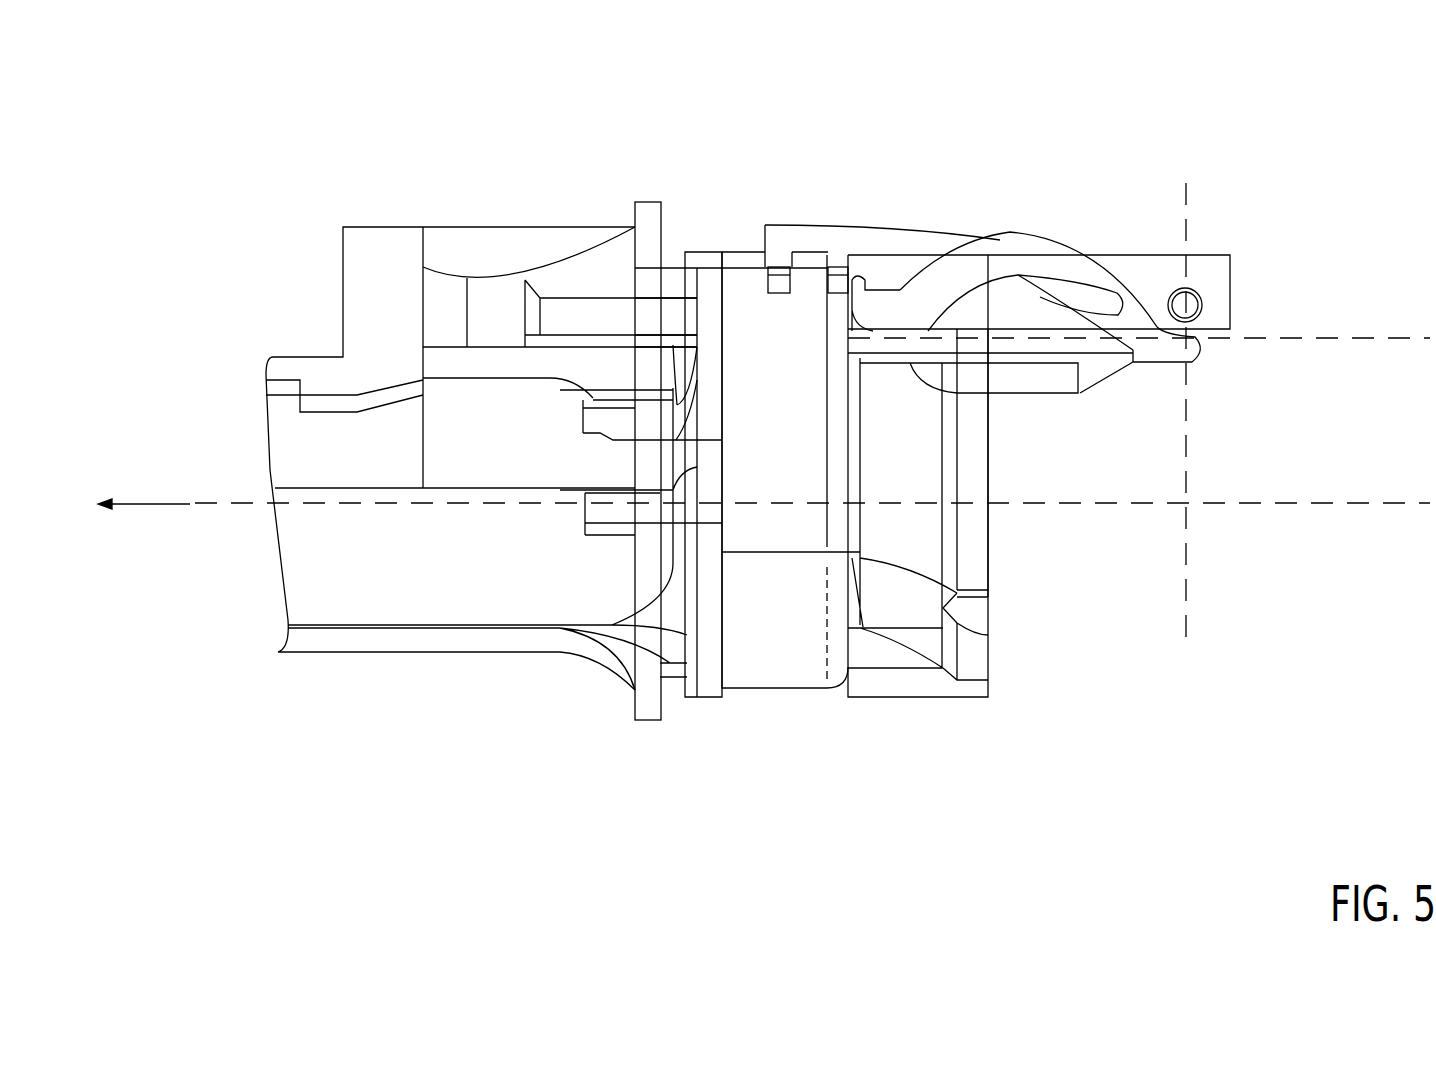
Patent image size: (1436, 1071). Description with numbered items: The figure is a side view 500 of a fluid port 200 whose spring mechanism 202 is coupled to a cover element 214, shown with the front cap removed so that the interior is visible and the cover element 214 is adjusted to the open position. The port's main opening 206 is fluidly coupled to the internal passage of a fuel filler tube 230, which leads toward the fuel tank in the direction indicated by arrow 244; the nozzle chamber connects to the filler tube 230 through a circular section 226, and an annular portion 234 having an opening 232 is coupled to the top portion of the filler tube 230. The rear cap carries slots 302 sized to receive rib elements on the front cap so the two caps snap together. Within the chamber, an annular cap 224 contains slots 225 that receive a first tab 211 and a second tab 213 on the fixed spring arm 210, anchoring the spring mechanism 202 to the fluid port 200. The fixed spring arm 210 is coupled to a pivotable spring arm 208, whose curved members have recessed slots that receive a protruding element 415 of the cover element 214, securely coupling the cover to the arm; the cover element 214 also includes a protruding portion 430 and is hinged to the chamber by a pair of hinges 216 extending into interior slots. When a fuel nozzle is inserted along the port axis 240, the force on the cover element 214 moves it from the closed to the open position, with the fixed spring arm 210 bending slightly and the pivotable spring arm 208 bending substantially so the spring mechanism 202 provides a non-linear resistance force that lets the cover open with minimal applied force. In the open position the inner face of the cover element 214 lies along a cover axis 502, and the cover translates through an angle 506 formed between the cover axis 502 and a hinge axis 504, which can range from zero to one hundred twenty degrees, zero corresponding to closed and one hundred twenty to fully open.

The side view 500 is at (128, 96).
The annular portion 234 is at (377, 223).
The opening 232 is at (487, 240).
The fuel filler tube 230 is at (325, 637).
The circular section 226 is at (648, 707).
The annular cap 224 is at (783, 673).
The second tab 213 is at (778, 260).
The first tab 211 is at (842, 258).
The slots 225 is at (833, 293).
The fixed spring arm 210 is at (793, 223).
The protruding element 415 is at (892, 267).
The pivotable spring arm 208 is at (1030, 233).
The spring mechanism 202 is at (1097, 222).
The hinges 216 is at (1183, 290).
The cover element 214 is at (1207, 356).
The protruding portion 430 is at (1043, 378).
The angle 506 is at (1083, 355).
The fluid port 200 is at (910, 708).
The slots 302 is at (982, 613).
The main opening 206 is at (895, 530).
The cover axis 502 is at (1335, 336).
The port axis 240 is at (1340, 503).
The hinge axis 504 is at (1183, 628).
The arrow 244 is at (153, 505).